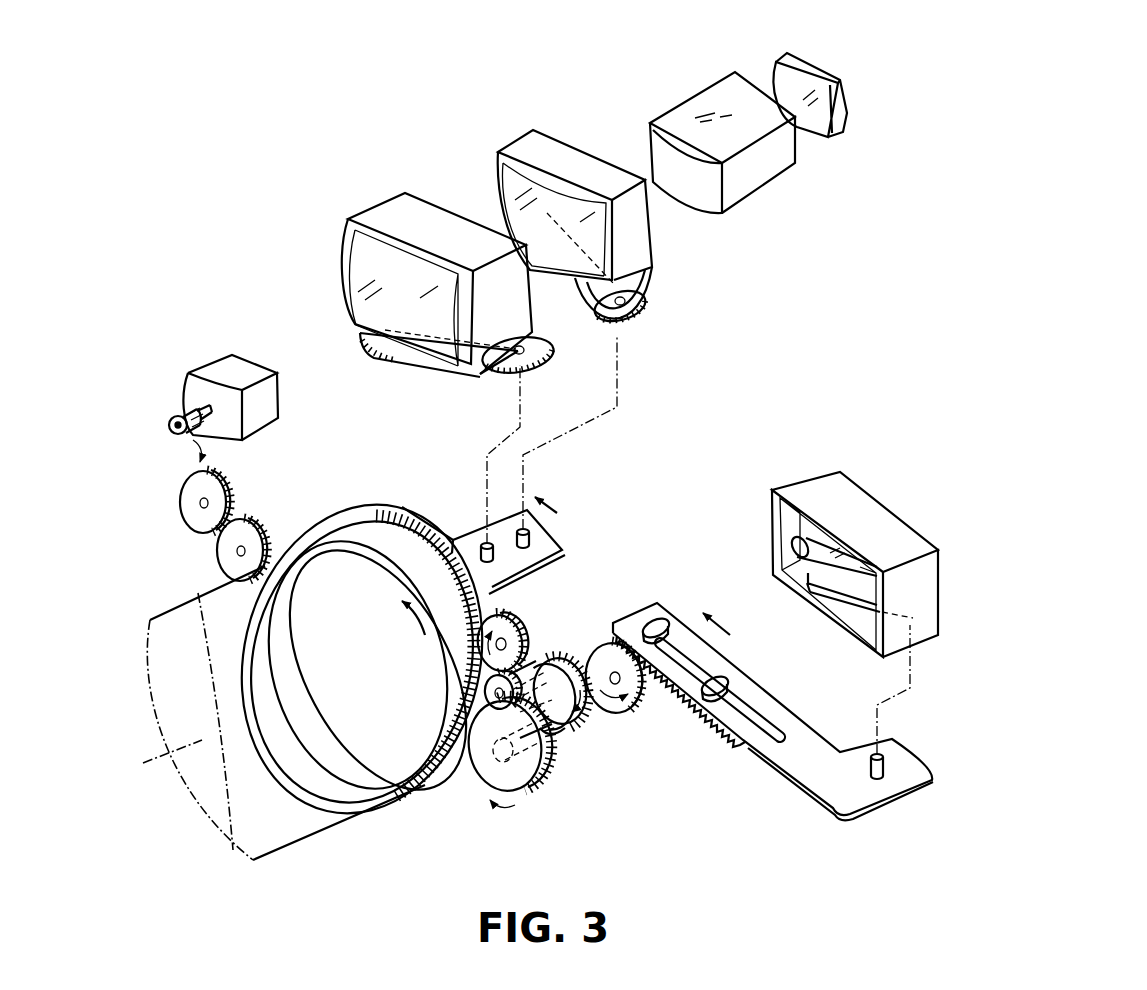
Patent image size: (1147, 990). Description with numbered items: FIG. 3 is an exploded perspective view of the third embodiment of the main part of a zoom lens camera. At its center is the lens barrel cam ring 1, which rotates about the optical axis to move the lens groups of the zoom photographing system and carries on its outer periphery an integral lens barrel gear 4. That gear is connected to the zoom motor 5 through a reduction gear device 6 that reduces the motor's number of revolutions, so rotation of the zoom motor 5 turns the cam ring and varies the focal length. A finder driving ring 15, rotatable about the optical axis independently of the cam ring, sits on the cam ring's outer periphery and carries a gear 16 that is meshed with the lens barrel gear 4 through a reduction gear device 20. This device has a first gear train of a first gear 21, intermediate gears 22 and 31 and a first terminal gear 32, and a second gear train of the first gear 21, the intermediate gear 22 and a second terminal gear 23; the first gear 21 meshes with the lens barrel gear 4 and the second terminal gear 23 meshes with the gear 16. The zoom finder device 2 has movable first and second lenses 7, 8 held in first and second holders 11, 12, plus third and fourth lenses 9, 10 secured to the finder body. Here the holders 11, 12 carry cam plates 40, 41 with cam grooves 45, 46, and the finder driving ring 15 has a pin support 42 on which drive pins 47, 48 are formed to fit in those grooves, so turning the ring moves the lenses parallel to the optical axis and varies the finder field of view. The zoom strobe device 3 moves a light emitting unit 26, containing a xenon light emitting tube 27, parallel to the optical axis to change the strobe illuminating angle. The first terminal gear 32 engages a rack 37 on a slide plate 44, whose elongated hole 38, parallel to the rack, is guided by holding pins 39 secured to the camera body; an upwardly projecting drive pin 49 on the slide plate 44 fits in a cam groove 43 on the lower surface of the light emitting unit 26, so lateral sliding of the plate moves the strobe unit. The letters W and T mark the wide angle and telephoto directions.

The lens barrel cam ring 1 is at (320, 823).
The zoom finder device 2 is at (435, 138).
The zoom strobe device 3 is at (893, 480).
The lens barrel gear 4 is at (425, 787).
The zoom motor 5 is at (232, 365).
The reduction gear device 6 is at (268, 503).
The first lens 7 is at (345, 280).
The second lens 8 is at (500, 187).
The third lens 9 is at (700, 105).
The fourth lens 10 is at (822, 75).
The first holder 11 is at (447, 284).
The second holder 12 is at (590, 212).
The finder driving ring 15 is at (385, 505).
The gear 16 is at (468, 787).
The reduction gear device 20 is at (546, 790).
The first gear 21 is at (485, 737).
The intermediate gear 22 is at (543, 645).
The second terminal gear 23 is at (520, 620).
The light emitting unit 26 is at (878, 537).
The light emitting tube 27 is at (795, 551).
The intermediate gear 31 is at (583, 730).
The first terminal gear 32 is at (633, 717).
The rack 37 is at (715, 728).
The elongated hole 38 is at (767, 717).
The holding pins 39 is at (663, 620).
The cam plate 40 is at (512, 386).
The cam plate 41 is at (637, 312).
The pin support 42 is at (560, 547).
The cam groove 43 is at (823, 597).
The slide plate 44 is at (928, 790).
The cam groove 45 is at (535, 352).
The cam groove 46 is at (622, 300).
The drive pin 47 is at (483, 546).
The drive pin 48 is at (520, 528).
The drive pin 49 is at (885, 762).